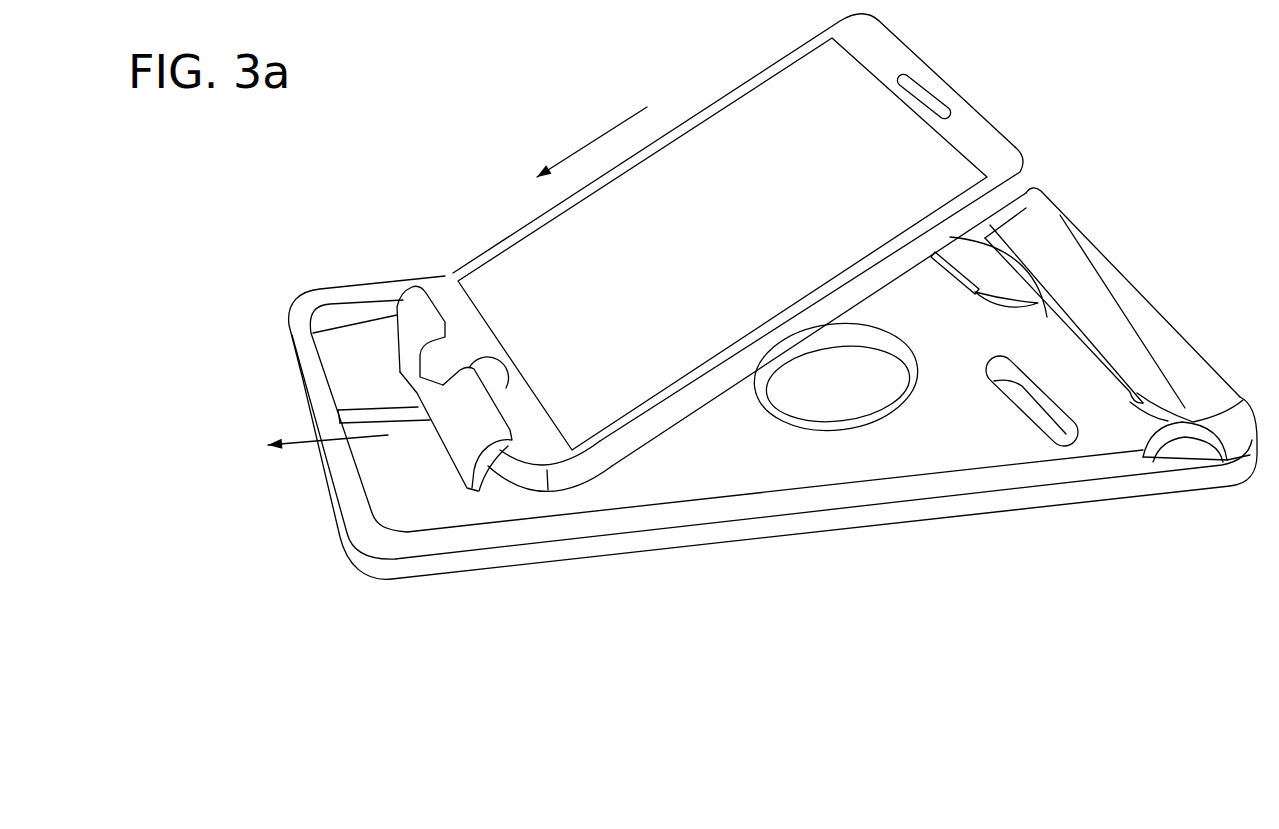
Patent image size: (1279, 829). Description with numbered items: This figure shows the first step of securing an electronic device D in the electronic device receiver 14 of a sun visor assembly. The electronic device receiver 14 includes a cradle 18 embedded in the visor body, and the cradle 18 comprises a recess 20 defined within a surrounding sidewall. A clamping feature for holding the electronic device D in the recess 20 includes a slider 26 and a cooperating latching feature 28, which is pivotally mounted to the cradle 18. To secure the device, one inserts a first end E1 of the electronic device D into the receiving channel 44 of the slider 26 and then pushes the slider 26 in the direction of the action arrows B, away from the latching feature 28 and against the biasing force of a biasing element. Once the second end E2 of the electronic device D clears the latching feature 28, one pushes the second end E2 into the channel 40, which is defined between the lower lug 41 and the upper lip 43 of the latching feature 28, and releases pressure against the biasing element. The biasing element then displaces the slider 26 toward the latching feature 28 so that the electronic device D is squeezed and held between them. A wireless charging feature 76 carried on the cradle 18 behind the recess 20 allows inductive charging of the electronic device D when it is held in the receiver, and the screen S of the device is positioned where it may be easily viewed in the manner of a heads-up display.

The electronic device receiver 14 is at (327, 537).
The cradle 18 is at (803, 483).
The recess 20 is at (975, 428).
The slider 26 is at (415, 328).
The latching feature 28 is at (1116, 252).
The channel 40 is at (1000, 277).
The lower lug 41 is at (987, 303).
The upper lip 43 is at (1066, 333).
The receiving channel 44 is at (548, 432).
The wireless charging feature 76 is at (855, 425).
The electronic device D is at (737, 96).
The screen S is at (757, 223).
The action arrows B is at (587, 143).
The first end E1 is at (507, 474).
The second end E2 is at (944, 78).